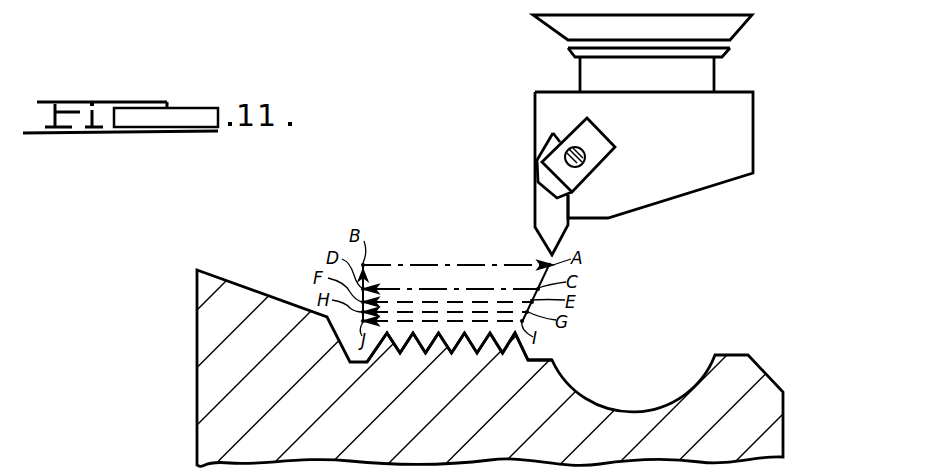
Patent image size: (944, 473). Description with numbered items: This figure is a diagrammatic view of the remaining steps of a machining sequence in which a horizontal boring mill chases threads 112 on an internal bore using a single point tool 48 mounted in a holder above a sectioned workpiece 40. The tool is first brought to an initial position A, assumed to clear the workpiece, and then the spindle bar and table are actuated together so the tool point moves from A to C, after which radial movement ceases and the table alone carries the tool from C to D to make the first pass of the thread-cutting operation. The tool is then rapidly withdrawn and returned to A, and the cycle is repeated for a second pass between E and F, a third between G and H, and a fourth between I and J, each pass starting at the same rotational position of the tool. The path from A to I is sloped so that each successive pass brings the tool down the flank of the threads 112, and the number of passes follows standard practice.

The workpiece 40 is at (212, 341).
The cutting tool holder 48 is at (545, 227).
The threads 112 is at (530, 357).